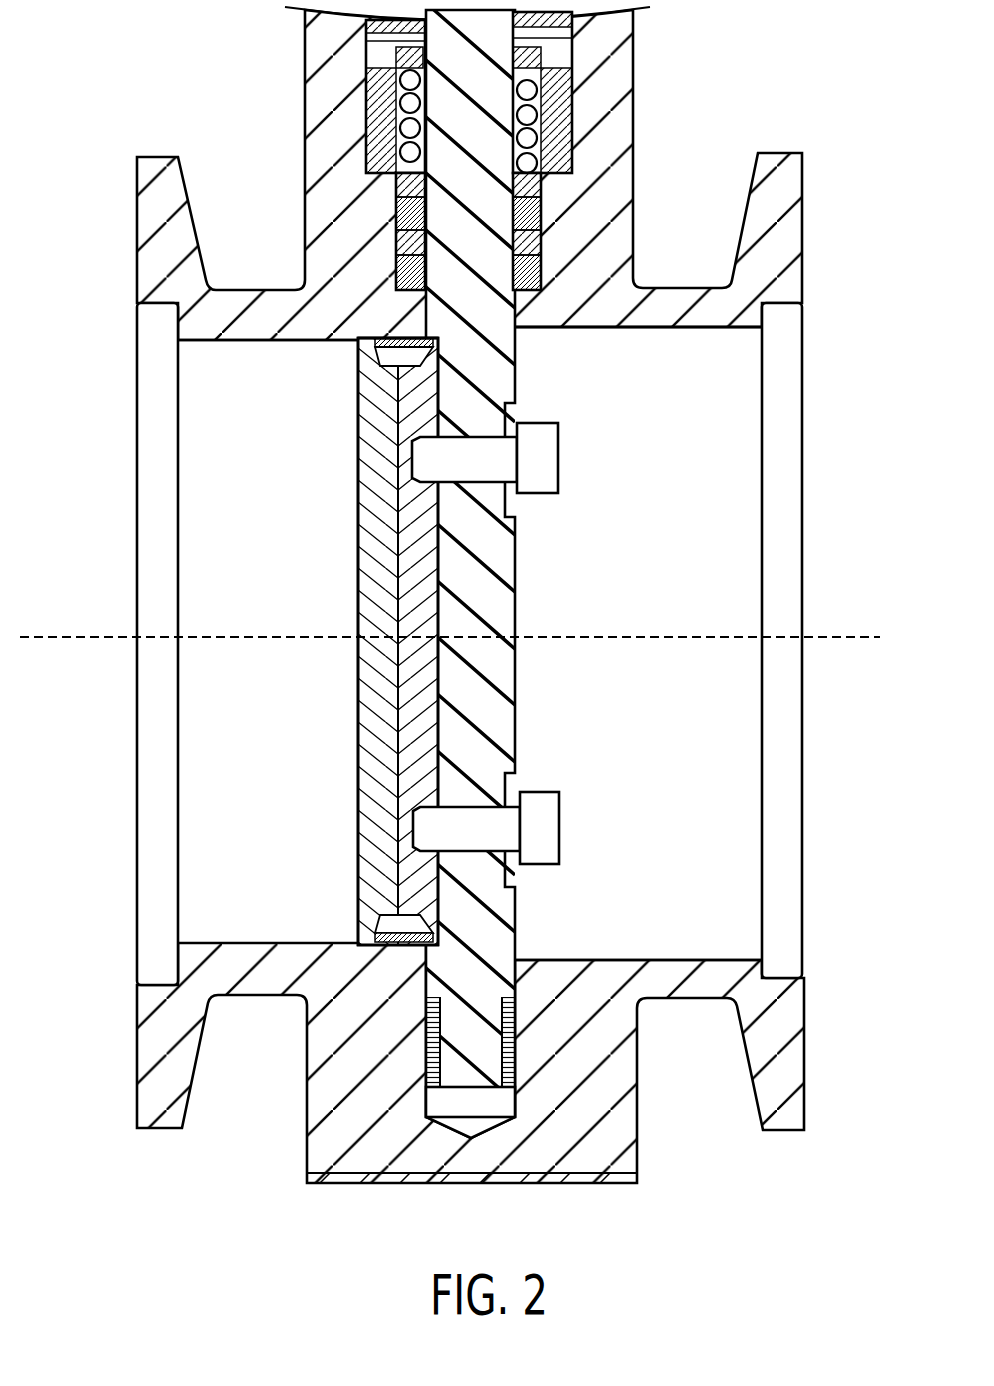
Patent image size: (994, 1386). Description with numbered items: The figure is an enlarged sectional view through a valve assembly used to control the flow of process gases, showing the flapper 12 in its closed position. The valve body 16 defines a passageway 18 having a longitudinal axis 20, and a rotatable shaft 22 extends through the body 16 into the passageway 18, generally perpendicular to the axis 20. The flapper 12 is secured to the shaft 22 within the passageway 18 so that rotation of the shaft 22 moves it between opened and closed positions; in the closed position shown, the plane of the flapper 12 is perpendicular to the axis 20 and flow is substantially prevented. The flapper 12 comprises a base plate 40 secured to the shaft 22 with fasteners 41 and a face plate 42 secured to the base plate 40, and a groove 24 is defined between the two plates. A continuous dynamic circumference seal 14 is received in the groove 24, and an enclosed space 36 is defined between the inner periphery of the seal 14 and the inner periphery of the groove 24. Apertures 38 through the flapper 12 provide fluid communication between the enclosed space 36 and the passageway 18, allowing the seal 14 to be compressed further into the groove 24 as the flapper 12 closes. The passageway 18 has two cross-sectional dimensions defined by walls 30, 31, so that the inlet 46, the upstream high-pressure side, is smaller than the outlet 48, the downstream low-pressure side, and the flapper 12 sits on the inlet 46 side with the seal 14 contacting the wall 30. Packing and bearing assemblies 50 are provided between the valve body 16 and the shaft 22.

The flapper 12 is at (345, 562).
The dynamic circumference seal 14 is at (370, 943).
The valve body 16 is at (640, 45).
The passageway 18 is at (637, 685).
The longitudinal axis 20 is at (873, 634).
The rotatable shaft 22 is at (501, 581).
The groove 24 is at (387, 375).
The wall 30 is at (262, 342).
The wall 31 is at (660, 329).
The enclosed space 36 is at (440, 351).
The aperture 38 is at (370, 358).
The base plate 40 is at (432, 718).
The fasteners 41 is at (560, 456).
The face plate 42 is at (360, 740).
The inlet 46 is at (153, 306).
The outlet 48 is at (787, 307).
The packing and bearing assemblies 50 is at (598, 22).